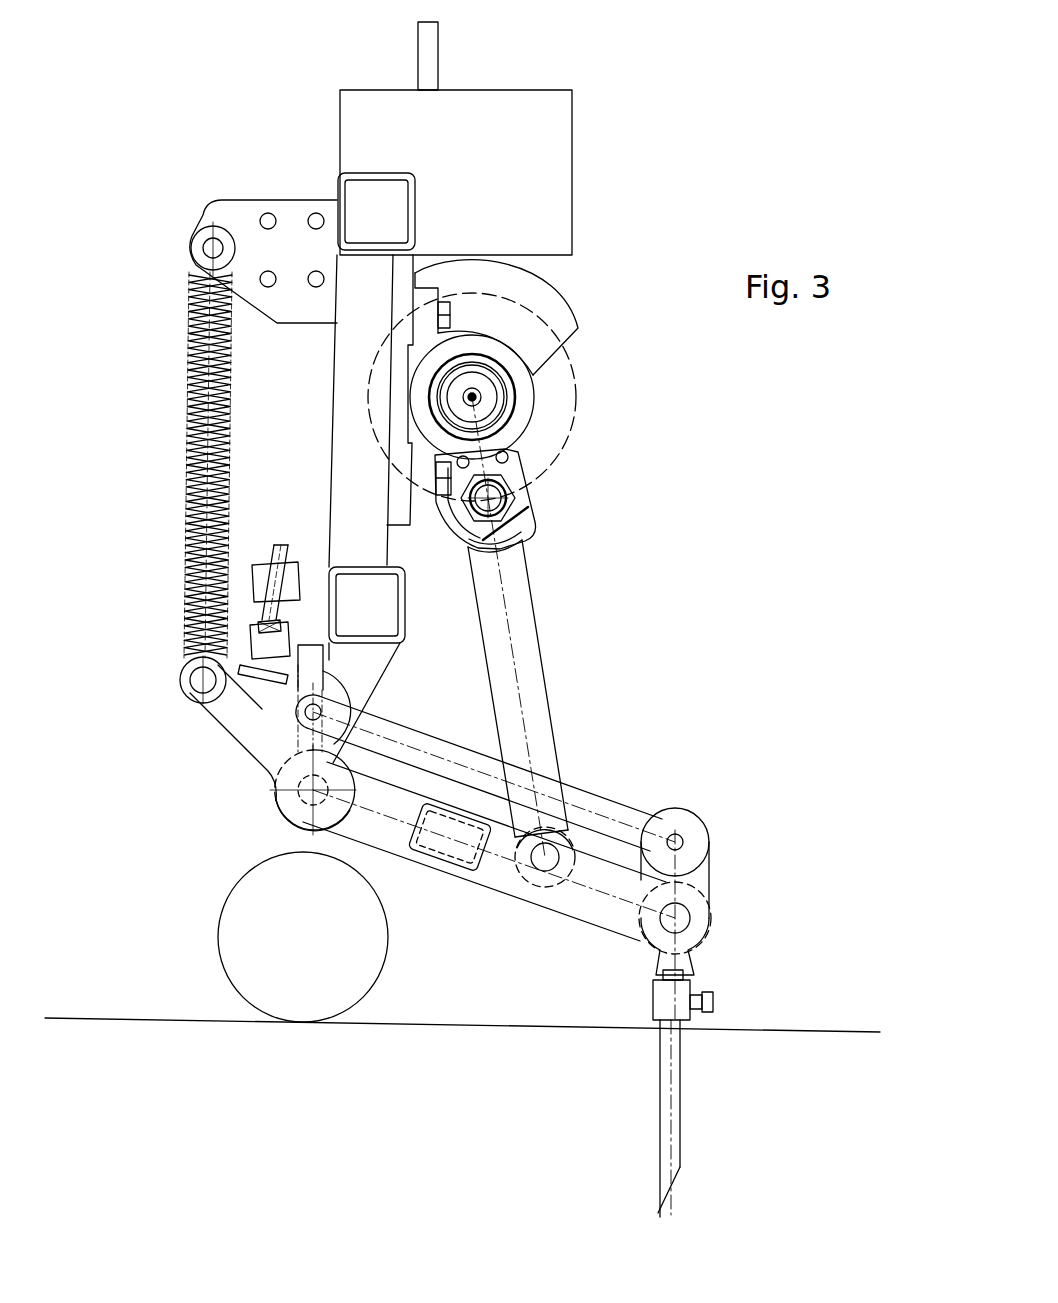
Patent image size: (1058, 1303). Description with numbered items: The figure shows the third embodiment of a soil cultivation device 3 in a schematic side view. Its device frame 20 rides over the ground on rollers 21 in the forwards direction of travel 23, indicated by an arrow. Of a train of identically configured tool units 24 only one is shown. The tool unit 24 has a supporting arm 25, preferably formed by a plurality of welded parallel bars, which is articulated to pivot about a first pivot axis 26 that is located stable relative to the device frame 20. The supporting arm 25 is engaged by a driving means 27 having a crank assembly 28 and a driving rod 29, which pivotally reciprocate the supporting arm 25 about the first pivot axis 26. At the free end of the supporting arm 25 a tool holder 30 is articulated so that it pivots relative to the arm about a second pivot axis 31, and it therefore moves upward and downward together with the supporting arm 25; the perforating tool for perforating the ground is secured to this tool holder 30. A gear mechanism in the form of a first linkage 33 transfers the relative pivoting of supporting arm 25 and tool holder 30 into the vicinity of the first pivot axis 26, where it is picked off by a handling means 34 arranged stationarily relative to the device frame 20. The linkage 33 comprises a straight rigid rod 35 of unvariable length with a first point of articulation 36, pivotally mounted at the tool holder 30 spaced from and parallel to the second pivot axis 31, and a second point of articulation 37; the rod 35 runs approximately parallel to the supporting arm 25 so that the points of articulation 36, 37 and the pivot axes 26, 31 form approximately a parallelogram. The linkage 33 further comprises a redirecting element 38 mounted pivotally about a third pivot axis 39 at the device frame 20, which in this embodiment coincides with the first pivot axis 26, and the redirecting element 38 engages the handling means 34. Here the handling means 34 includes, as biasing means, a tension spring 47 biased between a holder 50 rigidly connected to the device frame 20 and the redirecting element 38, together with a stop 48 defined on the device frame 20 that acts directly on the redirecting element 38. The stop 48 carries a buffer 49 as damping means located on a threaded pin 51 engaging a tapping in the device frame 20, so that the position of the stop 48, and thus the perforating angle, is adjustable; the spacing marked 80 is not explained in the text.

The soil cultivation device 3 is at (610, 72).
The device frame 20 is at (572, 183).
The rollers 21 is at (386, 944).
The forwards direction of travel 23 is at (762, 412).
The tool unit 24 is at (716, 812).
The supporting arm 25 is at (583, 904).
The first pivot axis 26 is at (312, 792).
The driving means 27 is at (577, 364).
The crank assembly 28 is at (535, 462).
The driving rod 29 is at (532, 630).
The tool holder 30 is at (712, 878).
The second pivot axis 31 is at (686, 922).
The first linkage 33 is at (604, 786).
The handling means 34 is at (160, 504).
The rod 35 is at (414, 736).
The first point of articulation 36 is at (688, 840).
The second point of articulation 37 is at (304, 708).
The redirecting element 38 is at (250, 726).
The third pivot axis 39 is at (322, 784).
The tension spring 47 is at (224, 452).
The stop 48 is at (240, 656).
The buffer 49 is at (250, 633).
The holder 50 is at (248, 208).
The threaded pin 51 is at (276, 556).
The distance 80 is at (734, 703).